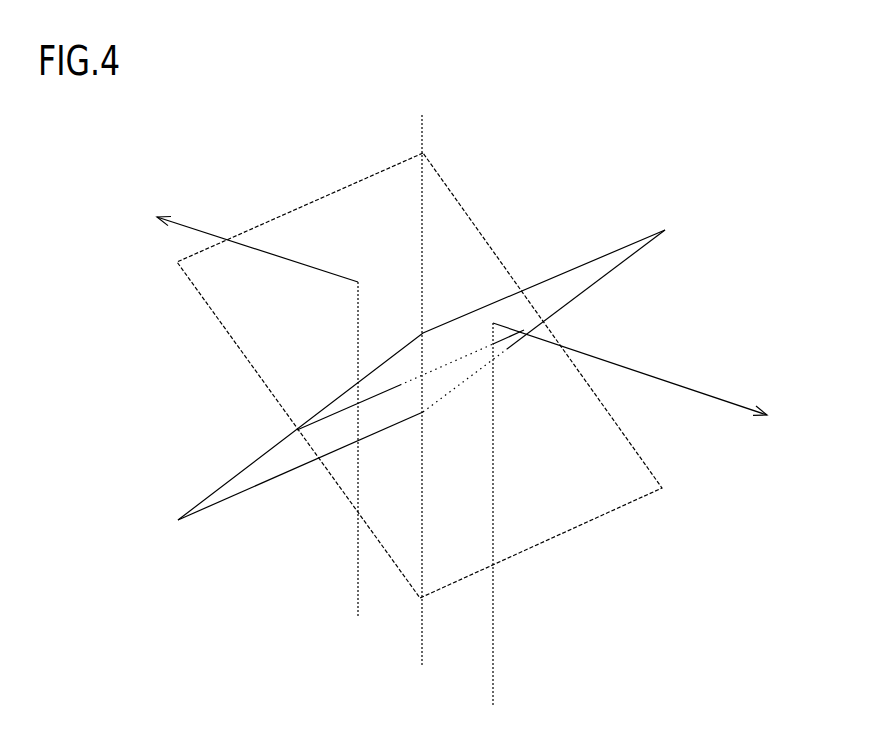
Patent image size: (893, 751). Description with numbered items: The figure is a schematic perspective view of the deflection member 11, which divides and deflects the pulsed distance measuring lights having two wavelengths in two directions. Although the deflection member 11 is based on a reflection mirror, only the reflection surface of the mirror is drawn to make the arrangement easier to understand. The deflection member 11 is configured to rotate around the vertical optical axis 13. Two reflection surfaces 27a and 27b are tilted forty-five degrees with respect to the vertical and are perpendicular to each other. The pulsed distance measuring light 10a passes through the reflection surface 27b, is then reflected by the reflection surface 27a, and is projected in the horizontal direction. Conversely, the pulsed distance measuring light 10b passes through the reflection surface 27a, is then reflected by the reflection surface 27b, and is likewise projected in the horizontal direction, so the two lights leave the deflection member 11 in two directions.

The vertical optical axis 13 is at (425, 139).
The deflection member 11 is at (573, 198).
The reflection surface 27a is at (278, 342).
The reflection surface 27b is at (580, 282).
The pulsed distance measuring light 10a is at (358, 582).
The pulsed distance measuring light 10b is at (493, 632).